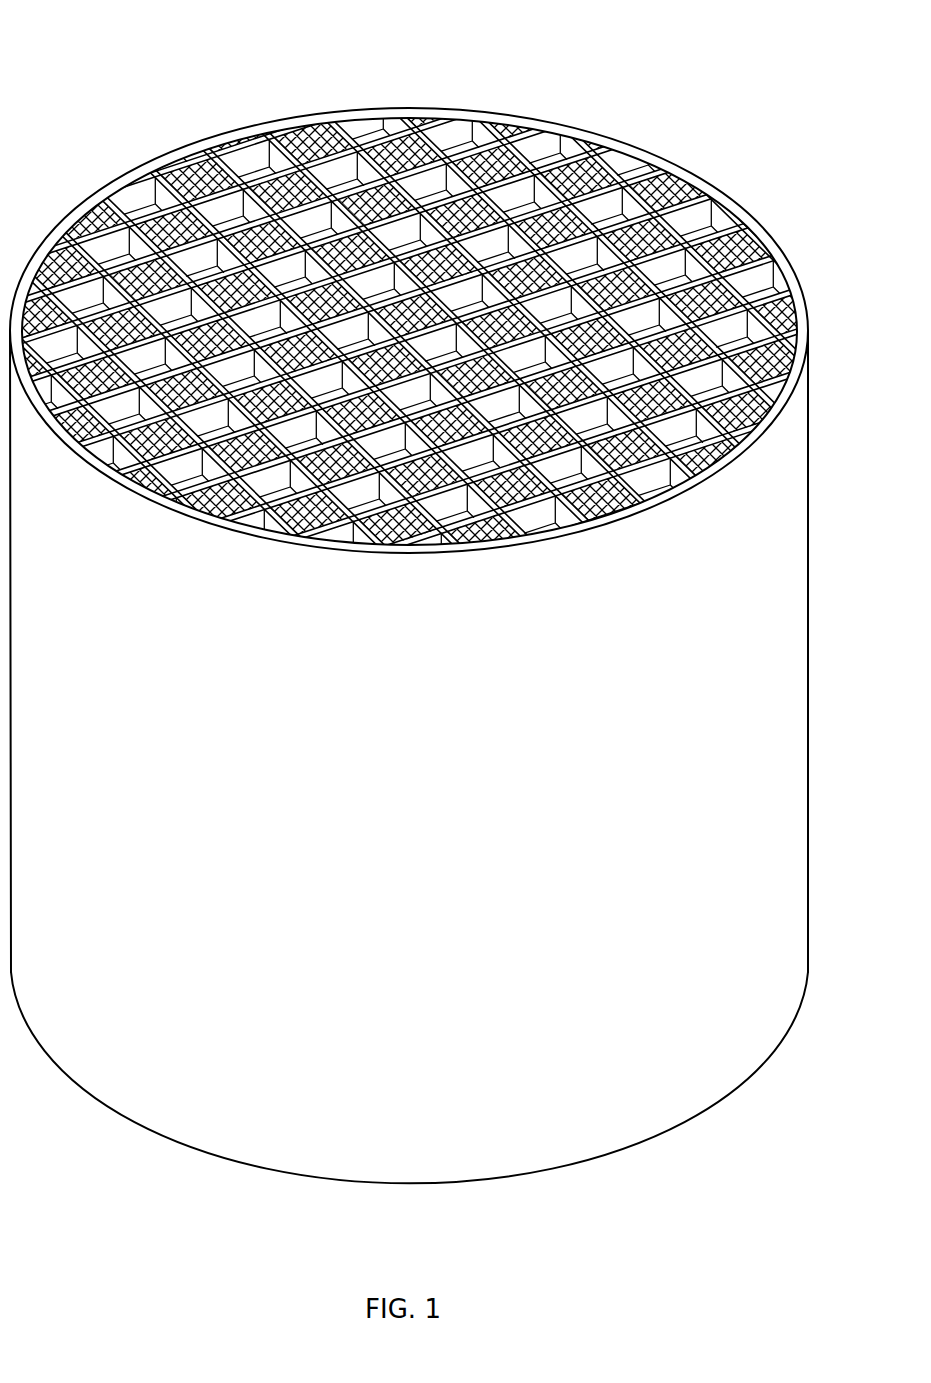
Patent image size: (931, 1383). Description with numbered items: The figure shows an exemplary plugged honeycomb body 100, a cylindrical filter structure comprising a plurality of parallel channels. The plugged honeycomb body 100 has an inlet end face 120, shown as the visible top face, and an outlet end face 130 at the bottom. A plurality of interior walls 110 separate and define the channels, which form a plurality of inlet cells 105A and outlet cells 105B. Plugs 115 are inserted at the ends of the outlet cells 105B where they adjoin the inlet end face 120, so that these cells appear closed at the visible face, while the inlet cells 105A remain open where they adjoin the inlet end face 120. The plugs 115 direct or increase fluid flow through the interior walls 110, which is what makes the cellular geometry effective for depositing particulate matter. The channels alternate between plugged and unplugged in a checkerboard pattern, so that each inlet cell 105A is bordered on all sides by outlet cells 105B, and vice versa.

The plugged honeycomb body 100 is at (660, 121).
The inlet cells 105A is at (233, 207).
The outlet cells 105B is at (135, 176).
The interior walls 110 is at (523, 124).
The plugs 115 is at (465, 365).
The inlet end face 120 is at (723, 190).
The outlet end face 130 is at (628, 1160).